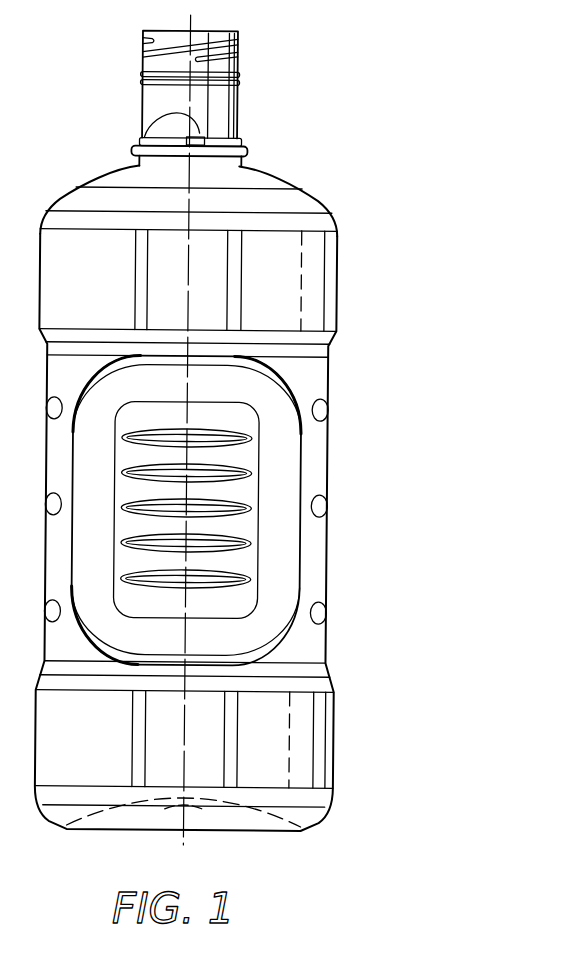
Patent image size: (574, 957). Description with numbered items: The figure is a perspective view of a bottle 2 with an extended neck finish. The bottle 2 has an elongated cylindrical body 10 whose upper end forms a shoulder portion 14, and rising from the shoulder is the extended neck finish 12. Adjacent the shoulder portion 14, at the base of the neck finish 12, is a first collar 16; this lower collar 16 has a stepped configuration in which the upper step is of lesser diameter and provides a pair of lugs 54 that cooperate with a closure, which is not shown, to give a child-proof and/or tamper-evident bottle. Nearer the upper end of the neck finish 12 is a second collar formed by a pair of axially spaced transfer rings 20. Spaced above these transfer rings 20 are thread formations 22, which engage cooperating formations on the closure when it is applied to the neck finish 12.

The bottle 2 is at (341, 273).
The elongated cylindrical body 10 is at (328, 462).
The extended neck finish 12 is at (140, 93).
The shoulder portion 14 is at (271, 174).
The first collar 16 is at (245, 146).
The transfer rings 20 is at (239, 76).
The thread formations 22 is at (237, 52).
The lugs 54 is at (146, 119).